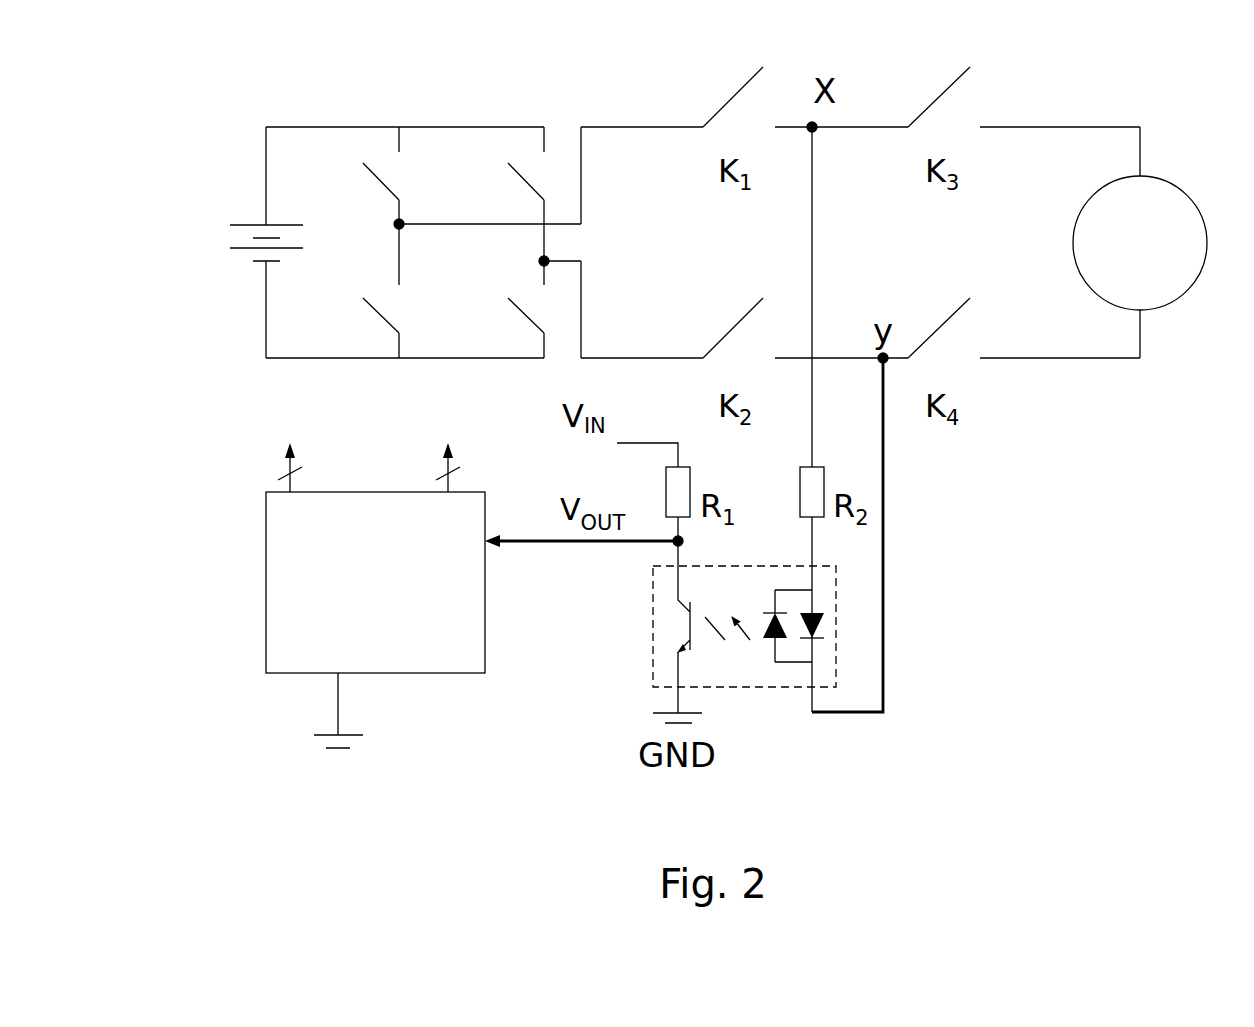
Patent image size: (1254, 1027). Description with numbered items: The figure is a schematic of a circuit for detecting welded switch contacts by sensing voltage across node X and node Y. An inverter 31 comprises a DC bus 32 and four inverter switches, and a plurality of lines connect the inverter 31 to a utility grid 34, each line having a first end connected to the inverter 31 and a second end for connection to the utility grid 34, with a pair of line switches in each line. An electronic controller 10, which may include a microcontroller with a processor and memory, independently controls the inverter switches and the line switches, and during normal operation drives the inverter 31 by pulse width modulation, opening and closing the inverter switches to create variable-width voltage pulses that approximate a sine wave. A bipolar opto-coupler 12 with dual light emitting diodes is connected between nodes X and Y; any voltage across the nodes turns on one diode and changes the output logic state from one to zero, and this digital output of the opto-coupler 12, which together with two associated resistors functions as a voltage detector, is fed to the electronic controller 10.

The electronic controller 10 is at (370, 578).
The opto-coupler 12 is at (744, 627).
The inverter 31 is at (409, 108).
The DC bus 32 is at (246, 242).
The utility grid 34 is at (1157, 242).